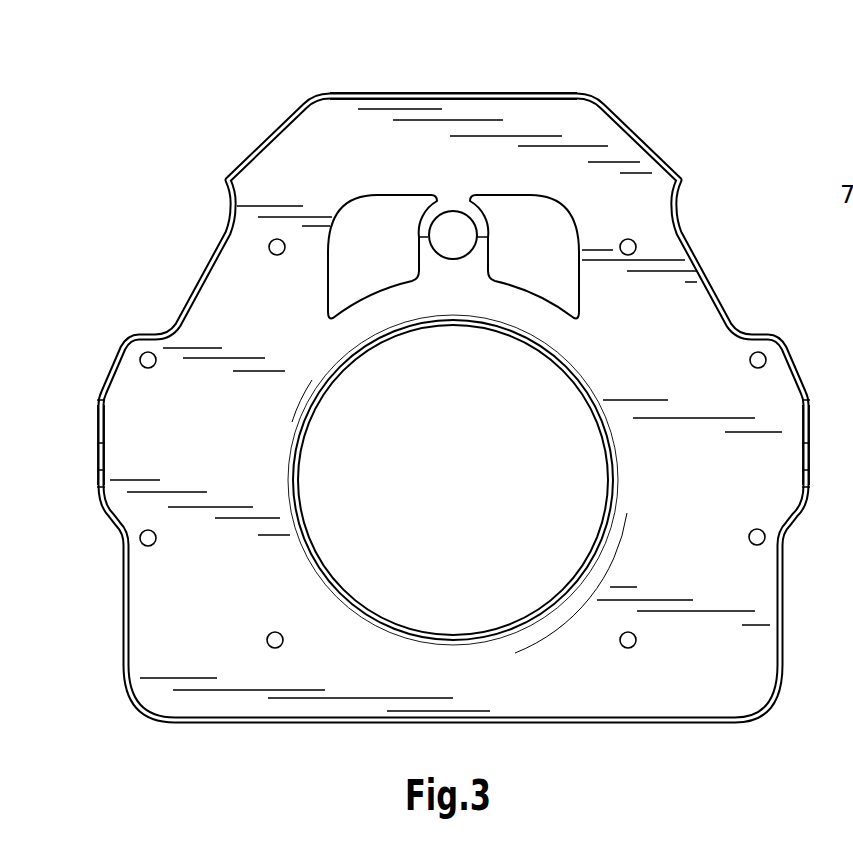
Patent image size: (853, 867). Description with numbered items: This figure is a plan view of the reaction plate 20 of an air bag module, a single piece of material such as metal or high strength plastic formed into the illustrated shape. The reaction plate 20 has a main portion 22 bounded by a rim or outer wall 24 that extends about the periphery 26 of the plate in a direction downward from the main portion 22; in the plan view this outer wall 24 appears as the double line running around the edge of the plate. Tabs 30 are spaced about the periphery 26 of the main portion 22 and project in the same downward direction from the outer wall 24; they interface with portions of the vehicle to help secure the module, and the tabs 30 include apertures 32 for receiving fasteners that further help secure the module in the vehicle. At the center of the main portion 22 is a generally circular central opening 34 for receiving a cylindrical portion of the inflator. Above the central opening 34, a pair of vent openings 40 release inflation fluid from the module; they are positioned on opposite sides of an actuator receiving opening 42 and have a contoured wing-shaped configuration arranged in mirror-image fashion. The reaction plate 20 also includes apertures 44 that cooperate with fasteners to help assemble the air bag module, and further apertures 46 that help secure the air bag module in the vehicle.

The reaction plate 20 is at (214, 82).
The main portion 22 is at (578, 658).
The outer wall 24 is at (443, 98).
The periphery 26 is at (367, 98).
The tabs 30 is at (98, 473).
The apertures 32 is at (97, 446).
The central opening 34 is at (410, 578).
The vent openings 40 is at (371, 226).
The actuator receiving opening 42 is at (453, 228).
The apertures 44 is at (282, 240).
The apertures 46 is at (153, 366).